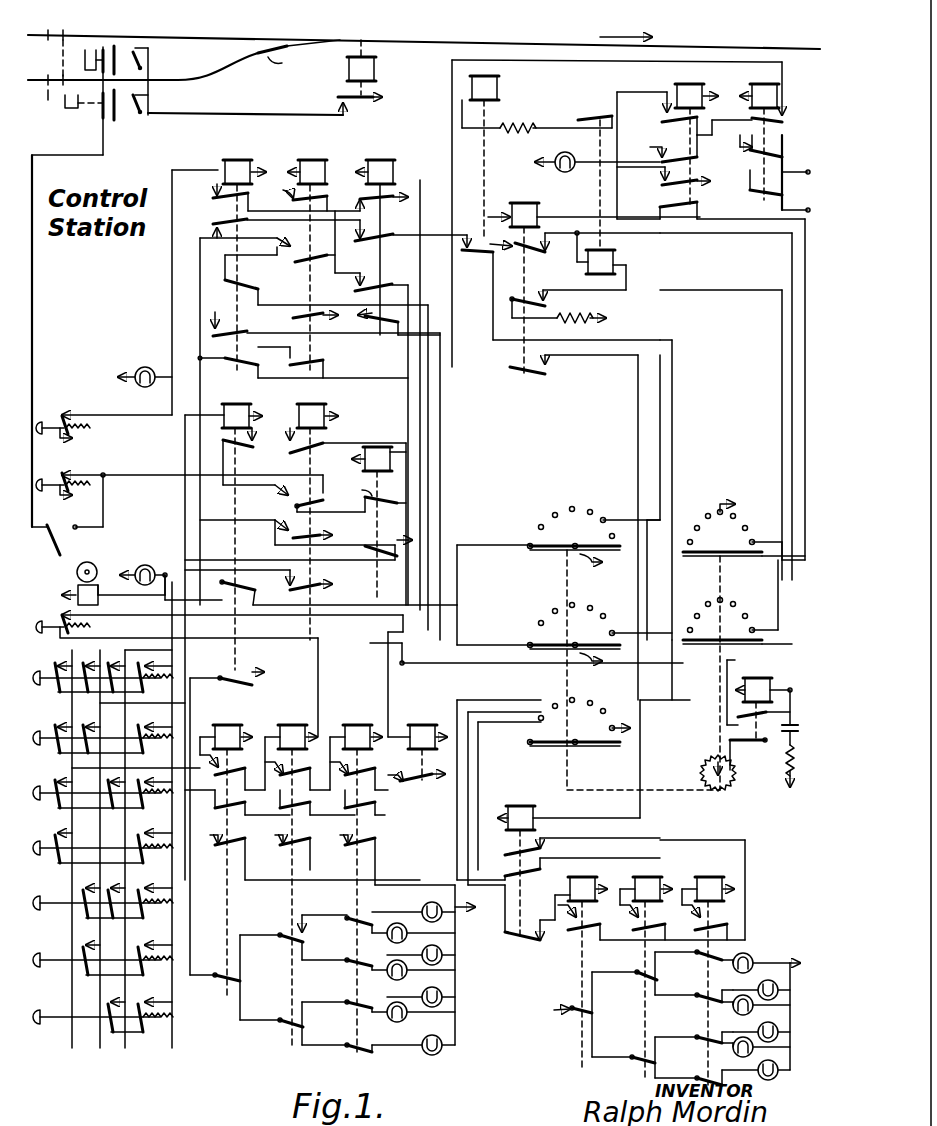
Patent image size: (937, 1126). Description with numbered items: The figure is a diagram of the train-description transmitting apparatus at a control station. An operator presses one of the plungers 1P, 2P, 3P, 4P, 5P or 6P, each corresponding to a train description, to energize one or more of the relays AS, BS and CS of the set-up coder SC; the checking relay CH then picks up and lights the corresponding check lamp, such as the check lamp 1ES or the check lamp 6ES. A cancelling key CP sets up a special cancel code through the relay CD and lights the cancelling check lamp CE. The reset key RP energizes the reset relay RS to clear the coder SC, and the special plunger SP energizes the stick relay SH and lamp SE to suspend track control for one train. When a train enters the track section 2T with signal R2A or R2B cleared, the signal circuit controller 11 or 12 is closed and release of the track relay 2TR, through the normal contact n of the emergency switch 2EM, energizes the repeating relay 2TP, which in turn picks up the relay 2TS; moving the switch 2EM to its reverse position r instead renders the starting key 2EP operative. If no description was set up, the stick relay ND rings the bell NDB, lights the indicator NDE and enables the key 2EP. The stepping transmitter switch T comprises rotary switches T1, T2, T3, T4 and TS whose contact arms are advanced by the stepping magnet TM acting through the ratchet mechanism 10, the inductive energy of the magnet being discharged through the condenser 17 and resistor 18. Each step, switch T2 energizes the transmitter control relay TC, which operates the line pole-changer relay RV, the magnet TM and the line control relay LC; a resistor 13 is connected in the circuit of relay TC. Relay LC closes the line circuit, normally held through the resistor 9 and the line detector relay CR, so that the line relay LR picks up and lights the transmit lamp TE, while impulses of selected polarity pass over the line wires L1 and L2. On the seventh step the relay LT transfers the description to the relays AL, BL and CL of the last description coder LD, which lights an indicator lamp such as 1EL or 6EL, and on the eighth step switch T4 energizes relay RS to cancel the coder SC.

The track section 2T is at (424, 64).
The signal R2A is at (70, 92).
The signal R2B is at (70, 105).
The signal circuit controller 11 is at (138, 81).
The signal circuit controller 12 is at (137, 114).
The track relay 2TR is at (368, 74).
The stick relay SH is at (319, 371).
The relay 2TS is at (320, 258).
The repeating relay 2TP is at (405, 236).
The line detector relay CR is at (617, 211).
The resistor 9 is at (556, 118).
The line control relay LC is at (592, 197).
The transmit lamp TE is at (590, 153).
The transmitter control relay TC is at (587, 441).
The resistor 13 is at (588, 311).
The line relay LR is at (711, 139).
The line pole-changer relay RV is at (762, 135).
The line wire L1 is at (799, 198).
The line wire L2 is at (799, 163).
The lamp SE is at (137, 366).
The special plunger SP is at (103, 420).
The starting key 2EP is at (178, 476).
The emergency switch 2EM is at (69, 515).
The normal contact n is at (37, 540).
The reverse position r is at (77, 543).
The checking relay CH is at (236, 677).
The stick relay ND is at (295, 510).
The relay CD is at (305, 521).
The indicator NDE is at (185, 574).
The bell NDB is at (95, 583).
The reset key RP is at (214, 672).
The cancelling key CP is at (98, 668).
The plunger 1P is at (104, 728).
The plunger 2P is at (111, 788).
The plunger 3P is at (98, 846).
The plunger 4P is at (98, 902).
The plunger 5P is at (98, 959).
The plunger 6P is at (98, 1016).
The coder relay AS is at (302, 861).
The coder relay BS is at (308, 873).
The coder relay CS is at (374, 877).
The reset relay RS is at (421, 744).
The set-up coder SC is at (259, 904).
The check lamp 1ES is at (397, 918).
The cancelling check lamp CE is at (431, 965).
The check lamp 6ES is at (448, 1051).
The rotary switch TS is at (588, 535).
The rotary switch T4 is at (564, 634).
The rotary switch T3 is at (588, 717).
The rotary switch T2 is at (744, 531).
The rotary switch T1 is at (731, 673).
The stepping transmitter switch T is at (690, 691).
The stepping magnet TM is at (759, 713).
The condenser 17 is at (800, 717).
The resistor 18 is at (800, 771).
The ratchet mechanism 10 is at (728, 775).
The relay LT is at (558, 820).
The coder relay AL is at (643, 961).
The last description coder LD is at (616, 954).
The coder relay BL is at (657, 966).
The coder relay CL is at (709, 962).
The indicator lamp 1EL is at (750, 960).
The indicator lamp 6EL is at (761, 1041).